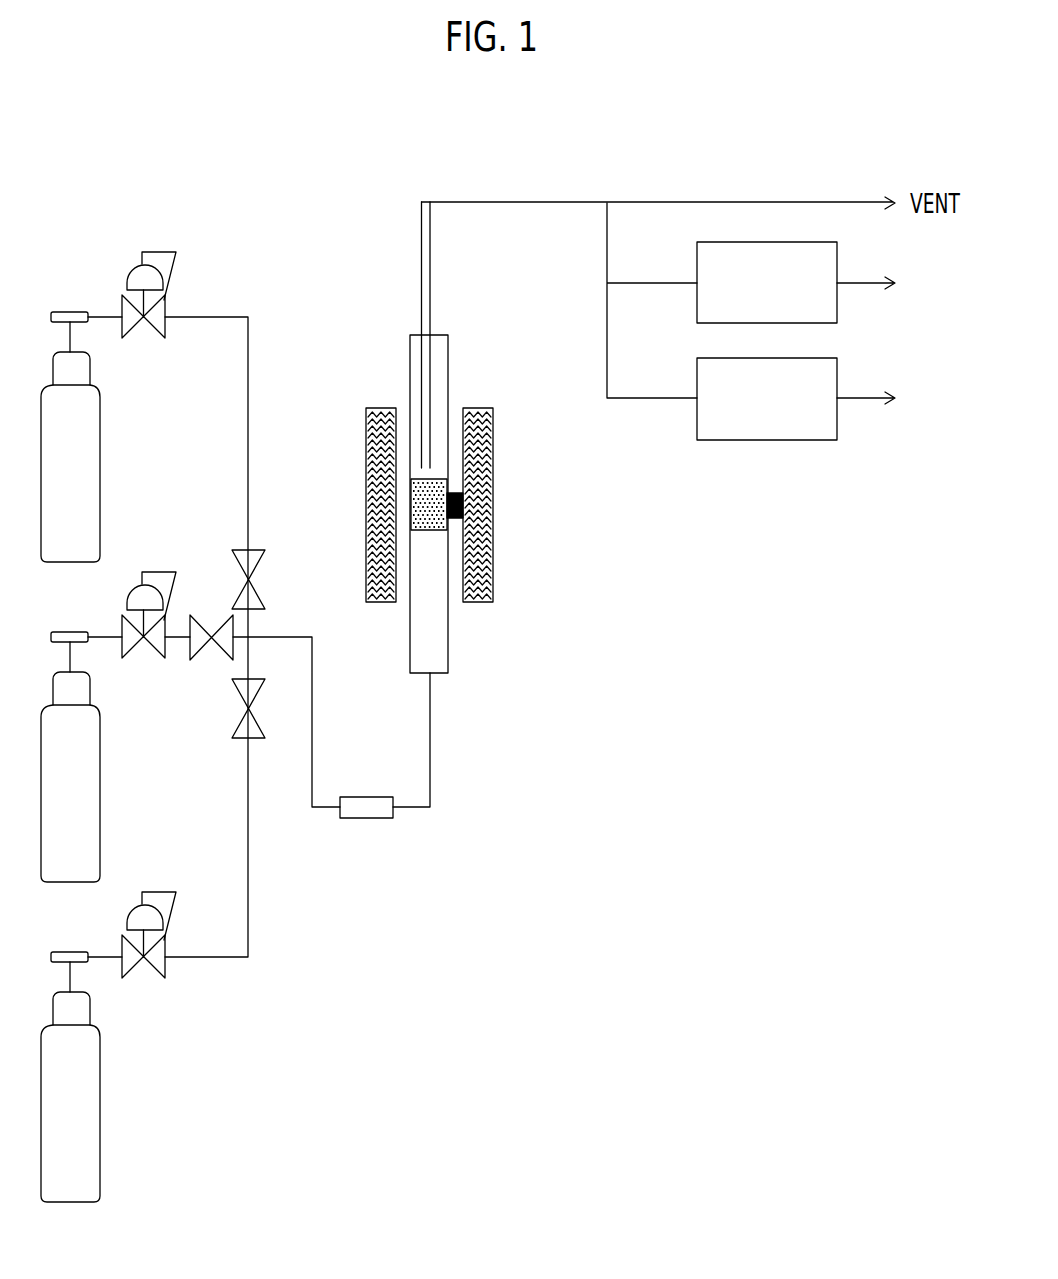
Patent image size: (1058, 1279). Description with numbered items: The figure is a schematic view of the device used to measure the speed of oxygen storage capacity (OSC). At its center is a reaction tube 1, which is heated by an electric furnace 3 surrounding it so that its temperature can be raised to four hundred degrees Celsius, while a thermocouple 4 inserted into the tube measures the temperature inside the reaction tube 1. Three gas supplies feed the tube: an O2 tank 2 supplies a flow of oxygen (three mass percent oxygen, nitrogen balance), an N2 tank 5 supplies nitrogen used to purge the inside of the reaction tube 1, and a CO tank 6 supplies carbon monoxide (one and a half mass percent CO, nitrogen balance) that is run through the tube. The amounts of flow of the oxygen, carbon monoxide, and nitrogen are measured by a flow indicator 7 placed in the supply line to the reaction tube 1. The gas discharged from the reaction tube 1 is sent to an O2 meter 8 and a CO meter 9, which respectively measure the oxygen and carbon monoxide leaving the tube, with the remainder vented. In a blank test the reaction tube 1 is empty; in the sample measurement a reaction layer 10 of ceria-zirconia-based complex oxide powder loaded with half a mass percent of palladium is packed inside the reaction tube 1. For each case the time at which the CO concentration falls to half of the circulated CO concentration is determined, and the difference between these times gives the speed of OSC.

The reaction tube 1 is at (448, 357).
The O2 tank 2 is at (100, 428).
The electric furnace 3 is at (493, 509).
The thermocouple 4 is at (422, 288).
The N2 tank 5 is at (100, 1068).
The CO tank 6 is at (100, 748).
The flow indicator 7 is at (366, 818).
The O2 meter 8 is at (827, 323).
The CO meter 9 is at (827, 440).
The reaction layer 10 is at (428, 530).